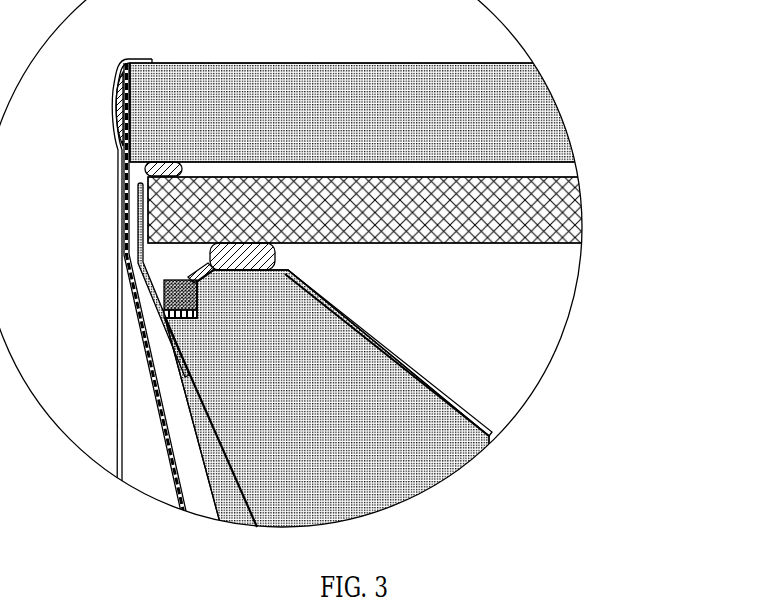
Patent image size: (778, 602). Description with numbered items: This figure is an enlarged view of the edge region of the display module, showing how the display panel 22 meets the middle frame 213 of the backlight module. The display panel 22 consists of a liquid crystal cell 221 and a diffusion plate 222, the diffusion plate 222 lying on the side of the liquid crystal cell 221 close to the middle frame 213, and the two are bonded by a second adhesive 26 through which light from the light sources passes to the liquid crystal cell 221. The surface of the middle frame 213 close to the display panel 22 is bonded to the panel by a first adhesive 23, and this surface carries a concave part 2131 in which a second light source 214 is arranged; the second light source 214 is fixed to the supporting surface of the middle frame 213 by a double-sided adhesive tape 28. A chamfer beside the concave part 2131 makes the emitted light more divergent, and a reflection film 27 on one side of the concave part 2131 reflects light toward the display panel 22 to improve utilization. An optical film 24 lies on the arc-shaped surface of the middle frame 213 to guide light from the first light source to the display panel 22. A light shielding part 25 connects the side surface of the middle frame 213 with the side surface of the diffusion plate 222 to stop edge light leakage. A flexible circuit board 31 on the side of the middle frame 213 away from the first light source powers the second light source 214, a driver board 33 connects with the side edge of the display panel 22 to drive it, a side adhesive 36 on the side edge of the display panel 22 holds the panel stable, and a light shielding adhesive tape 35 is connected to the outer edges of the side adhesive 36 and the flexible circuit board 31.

The display panel 22 is at (425, 153).
The liquid crystal cell 221 is at (557, 152).
The diffusion plate 222 is at (570, 194).
The middle frame 213 is at (427, 407).
The optical film 24 is at (373, 337).
The first adhesive 23 is at (258, 257).
The second adhesive 26 is at (152, 168).
The light shielding part 25 is at (140, 207).
The reflection film 27 is at (189, 278).
The second light source 214 is at (165, 293).
The concave part 2131 is at (168, 308).
The double-sided adhesive tape 28 is at (167, 320).
The flexible circuit board 31 is at (197, 398).
The driver board 33 is at (170, 457).
The light shielding adhesive tape 35 is at (117, 382).
The side adhesive 36 is at (118, 110).